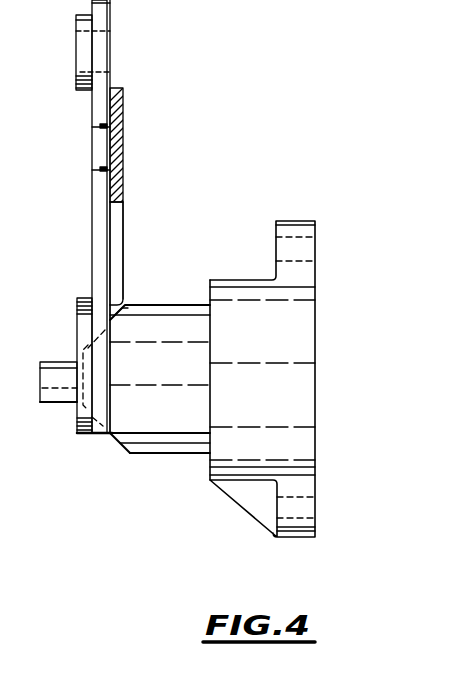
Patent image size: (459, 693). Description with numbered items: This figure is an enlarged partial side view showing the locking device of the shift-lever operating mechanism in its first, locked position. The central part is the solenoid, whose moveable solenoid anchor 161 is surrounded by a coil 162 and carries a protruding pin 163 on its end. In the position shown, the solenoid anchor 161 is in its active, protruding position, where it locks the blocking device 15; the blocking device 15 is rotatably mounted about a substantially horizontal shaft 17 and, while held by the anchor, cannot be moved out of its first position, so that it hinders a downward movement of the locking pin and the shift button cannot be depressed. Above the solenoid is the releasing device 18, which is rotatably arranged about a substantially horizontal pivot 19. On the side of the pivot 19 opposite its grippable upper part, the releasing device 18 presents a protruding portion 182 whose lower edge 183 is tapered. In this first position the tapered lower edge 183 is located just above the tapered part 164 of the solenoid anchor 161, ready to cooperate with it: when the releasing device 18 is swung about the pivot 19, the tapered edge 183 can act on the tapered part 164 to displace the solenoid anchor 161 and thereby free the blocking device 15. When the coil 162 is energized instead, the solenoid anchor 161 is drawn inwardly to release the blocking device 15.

The blocking device 15 is at (92, 191).
The horizontal shaft 17 is at (100, 47).
The releasing device 18 is at (136, 209).
The pivot 19 is at (123, 137).
The solenoid anchor 161 is at (177, 442).
The coil 162 is at (300, 398).
The protruding pin 163 is at (57, 403).
The tapered part 164 is at (110, 440).
The protruding portion 182 is at (118, 235).
The lower edge 183 is at (138, 303).